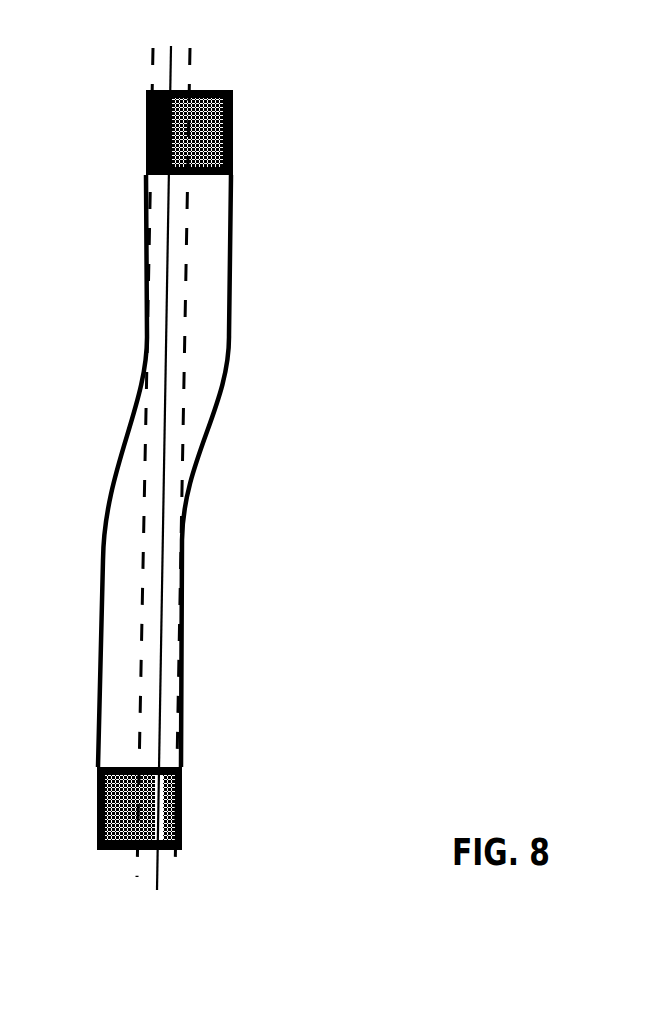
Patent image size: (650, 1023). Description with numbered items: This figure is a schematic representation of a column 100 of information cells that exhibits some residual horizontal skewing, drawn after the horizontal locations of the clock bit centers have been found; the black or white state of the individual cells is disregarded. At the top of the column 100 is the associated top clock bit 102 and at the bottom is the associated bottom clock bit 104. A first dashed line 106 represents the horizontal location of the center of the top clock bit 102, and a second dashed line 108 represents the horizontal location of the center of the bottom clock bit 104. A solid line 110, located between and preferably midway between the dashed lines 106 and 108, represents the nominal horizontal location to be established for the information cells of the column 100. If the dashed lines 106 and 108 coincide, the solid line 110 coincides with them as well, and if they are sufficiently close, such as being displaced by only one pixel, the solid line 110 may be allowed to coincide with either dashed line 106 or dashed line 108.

The column of information cells 100 is at (228, 358).
The top clock bit 102 is at (233, 127).
The bottom clock bit 104 is at (182, 805).
The dashed line 106 is at (190, 67).
The dashed line 108 is at (137, 867).
The solid line 110 is at (157, 875).